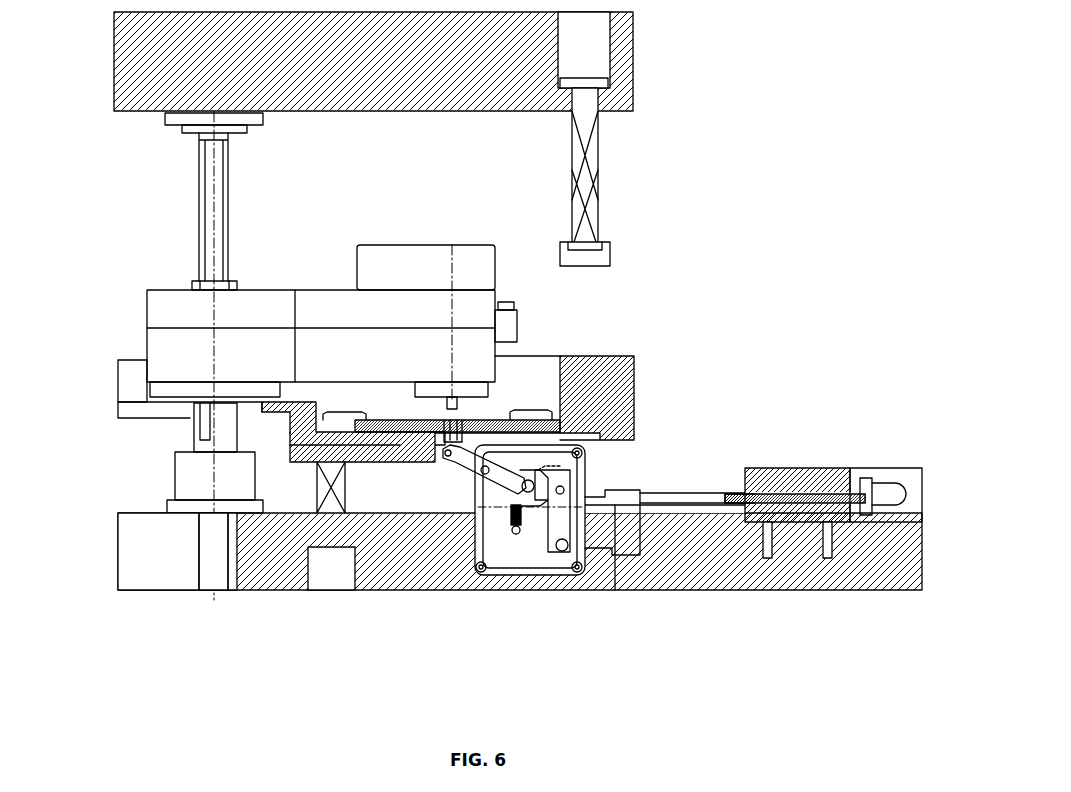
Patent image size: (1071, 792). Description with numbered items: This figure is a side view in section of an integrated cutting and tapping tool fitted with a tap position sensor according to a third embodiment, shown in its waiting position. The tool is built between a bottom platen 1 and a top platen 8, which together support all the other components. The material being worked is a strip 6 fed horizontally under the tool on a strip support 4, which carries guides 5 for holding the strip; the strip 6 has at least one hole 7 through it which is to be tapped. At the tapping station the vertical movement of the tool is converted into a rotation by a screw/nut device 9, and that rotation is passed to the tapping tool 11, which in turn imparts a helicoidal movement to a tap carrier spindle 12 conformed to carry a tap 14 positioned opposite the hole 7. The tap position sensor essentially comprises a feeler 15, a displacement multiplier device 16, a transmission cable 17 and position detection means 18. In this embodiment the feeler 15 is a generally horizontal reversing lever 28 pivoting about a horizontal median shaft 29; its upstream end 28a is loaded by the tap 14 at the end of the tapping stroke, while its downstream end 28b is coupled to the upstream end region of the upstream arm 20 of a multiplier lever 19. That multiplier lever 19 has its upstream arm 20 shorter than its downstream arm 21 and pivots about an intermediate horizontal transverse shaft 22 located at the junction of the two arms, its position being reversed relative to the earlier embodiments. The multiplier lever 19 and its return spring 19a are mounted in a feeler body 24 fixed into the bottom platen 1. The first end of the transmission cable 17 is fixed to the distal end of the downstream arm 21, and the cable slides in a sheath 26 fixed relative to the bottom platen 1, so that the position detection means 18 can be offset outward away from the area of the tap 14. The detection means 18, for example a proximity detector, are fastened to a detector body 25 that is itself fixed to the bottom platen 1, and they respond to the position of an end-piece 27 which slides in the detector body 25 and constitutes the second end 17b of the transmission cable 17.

The bottom platen 1 is at (265, 572).
The strip support 4 is at (635, 372).
The guides 5 is at (350, 412).
The strip 6 is at (395, 420).
The hole 7 is at (440, 425).
The top platen 8 is at (633, 78).
The screw/nut device 9 is at (210, 228).
The tapping tool 11 is at (315, 312).
The tap carrier spindle 12 is at (449, 395).
The tap 14 is at (560, 325).
The feeler 15 is at (438, 453).
The displacement multiplier device 16 is at (492, 532).
The transmission cable 17 is at (795, 525).
The second end of the transmission cable 17b is at (870, 522).
The position detection means 18 is at (882, 485).
The multiplier lever 19 is at (570, 580).
The return spring 19a is at (565, 553).
The upstream arm 20 is at (545, 468).
The downstream arm 21 is at (612, 515).
The intermediate horizontal transverse shaft 22 is at (558, 495).
The feeler body 24 is at (517, 527).
The detector body 25 is at (780, 522).
The sheath 26 is at (700, 522).
The end-piece 27 is at (835, 540).
The reversing lever 28 is at (486, 500).
The upstream end 28a is at (450, 478).
The downstream end 28b is at (575, 410).
The horizontal median shaft 29 is at (492, 486).